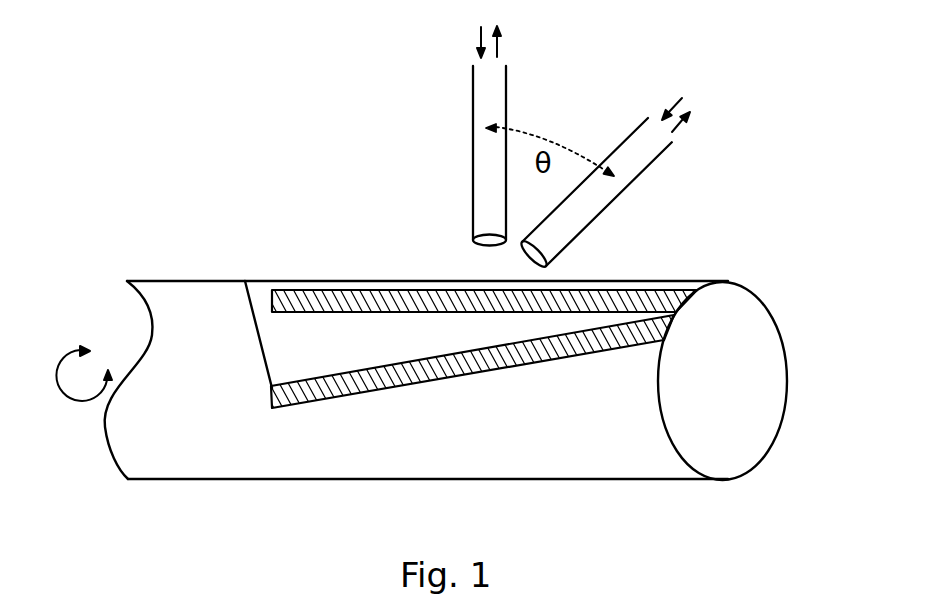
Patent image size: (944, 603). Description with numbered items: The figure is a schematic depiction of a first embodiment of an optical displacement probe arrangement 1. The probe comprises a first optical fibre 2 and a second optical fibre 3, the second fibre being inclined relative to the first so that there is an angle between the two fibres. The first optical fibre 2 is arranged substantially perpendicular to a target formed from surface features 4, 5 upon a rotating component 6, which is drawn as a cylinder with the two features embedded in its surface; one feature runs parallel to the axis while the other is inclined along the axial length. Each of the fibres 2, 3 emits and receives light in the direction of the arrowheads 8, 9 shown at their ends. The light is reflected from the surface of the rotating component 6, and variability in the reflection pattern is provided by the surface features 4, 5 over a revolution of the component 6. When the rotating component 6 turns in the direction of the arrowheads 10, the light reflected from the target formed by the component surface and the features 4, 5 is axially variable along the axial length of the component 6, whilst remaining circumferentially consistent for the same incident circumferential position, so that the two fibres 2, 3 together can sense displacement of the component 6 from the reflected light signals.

The optical displacement probe arrangement 1 is at (772, 190).
The first optical fibre 2 is at (471, 190).
The second optical fibre 3 is at (601, 212).
The surface feature 4 is at (363, 290).
The surface feature 5 is at (560, 360).
The rotating component 6 is at (247, 467).
The arrowheads 8 is at (480, 35).
The arrowheads 9 is at (675, 130).
The arrowheads 10 is at (66, 399).